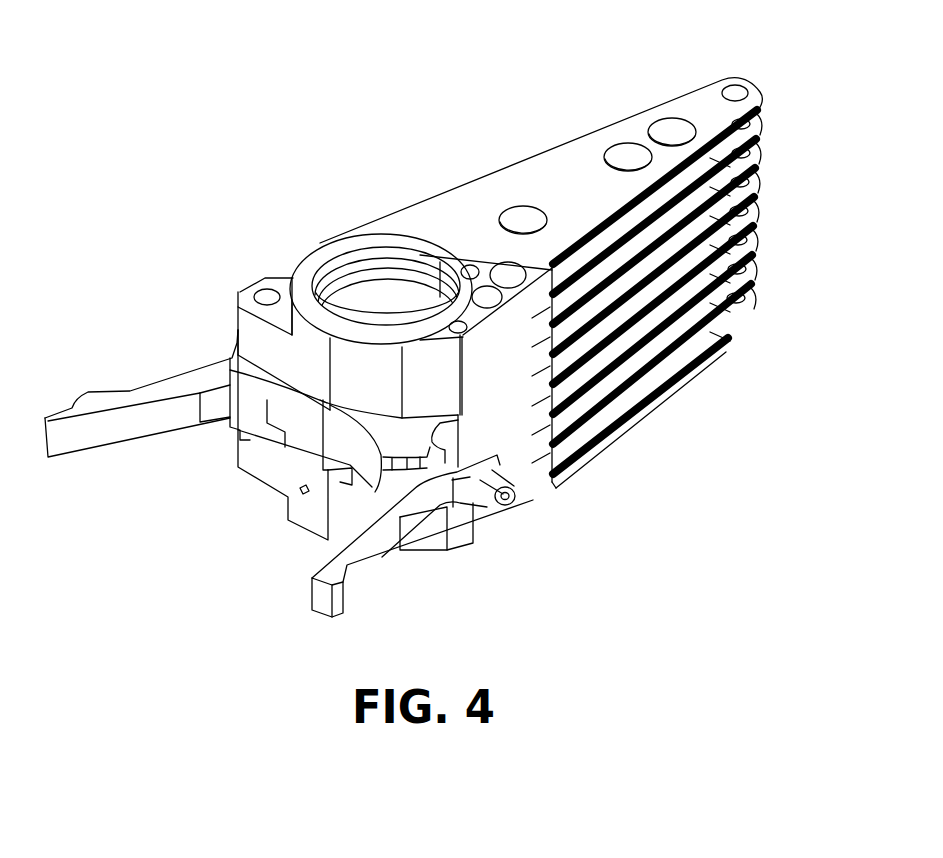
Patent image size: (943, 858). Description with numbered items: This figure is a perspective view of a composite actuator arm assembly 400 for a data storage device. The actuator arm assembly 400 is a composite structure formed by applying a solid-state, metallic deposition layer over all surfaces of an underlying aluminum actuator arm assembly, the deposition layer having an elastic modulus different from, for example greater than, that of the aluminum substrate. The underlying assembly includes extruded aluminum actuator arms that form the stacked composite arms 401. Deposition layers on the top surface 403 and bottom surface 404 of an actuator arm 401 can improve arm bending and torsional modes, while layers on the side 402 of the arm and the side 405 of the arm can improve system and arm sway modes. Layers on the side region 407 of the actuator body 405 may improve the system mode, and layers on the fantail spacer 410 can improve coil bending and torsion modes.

The composite actuator arm assembly 400 is at (438, 317).
The composite arm 401 is at (592, 150).
The side of actuator arm 402 is at (680, 380).
The top surface 403 is at (574, 197).
The bottom surface 404 is at (633, 218).
The actuator body 405 is at (316, 250).
The side region of actuator body 407 is at (508, 428).
The fantail spacer 410 is at (102, 405).